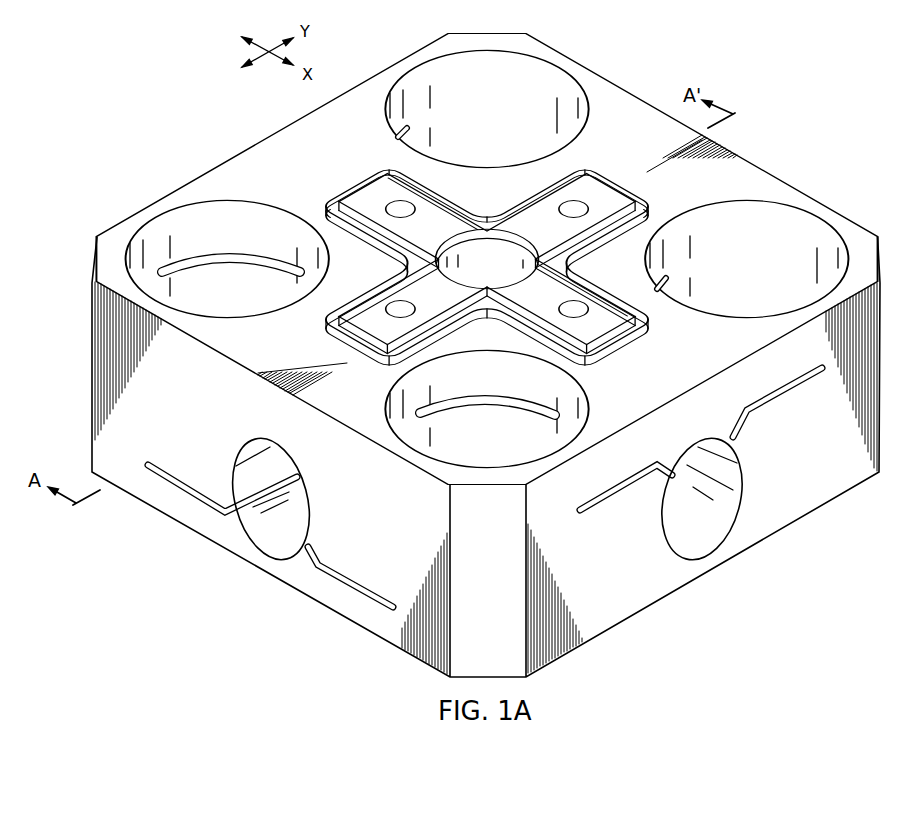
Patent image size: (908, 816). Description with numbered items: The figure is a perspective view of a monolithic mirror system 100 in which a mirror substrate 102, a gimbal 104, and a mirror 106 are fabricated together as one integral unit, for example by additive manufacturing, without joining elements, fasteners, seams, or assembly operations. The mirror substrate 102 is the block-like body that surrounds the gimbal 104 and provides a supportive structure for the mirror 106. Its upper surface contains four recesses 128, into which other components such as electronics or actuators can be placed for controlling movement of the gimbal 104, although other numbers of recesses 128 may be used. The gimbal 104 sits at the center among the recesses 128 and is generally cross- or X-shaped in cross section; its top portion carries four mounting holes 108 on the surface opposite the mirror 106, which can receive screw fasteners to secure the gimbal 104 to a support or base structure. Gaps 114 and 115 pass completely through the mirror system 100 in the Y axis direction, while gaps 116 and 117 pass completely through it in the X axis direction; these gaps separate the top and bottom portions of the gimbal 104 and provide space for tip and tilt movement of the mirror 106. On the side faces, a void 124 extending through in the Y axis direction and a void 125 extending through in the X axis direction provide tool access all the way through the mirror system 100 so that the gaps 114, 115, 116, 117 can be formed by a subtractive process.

The monolithic mirror system 100 is at (146, 74).
The mirror substrate 102 is at (768, 185).
The gimbal 104 is at (345, 193).
The mirror 106 is at (637, 613).
The mounting holes 108 is at (395, 205).
The gap 114 is at (195, 492).
The gap 115 is at (357, 588).
The gap 116 is at (233, 258).
The gap 117 is at (410, 131).
The void 124 is at (276, 534).
The void 125 is at (704, 531).
The recesses 128 is at (533, 108).